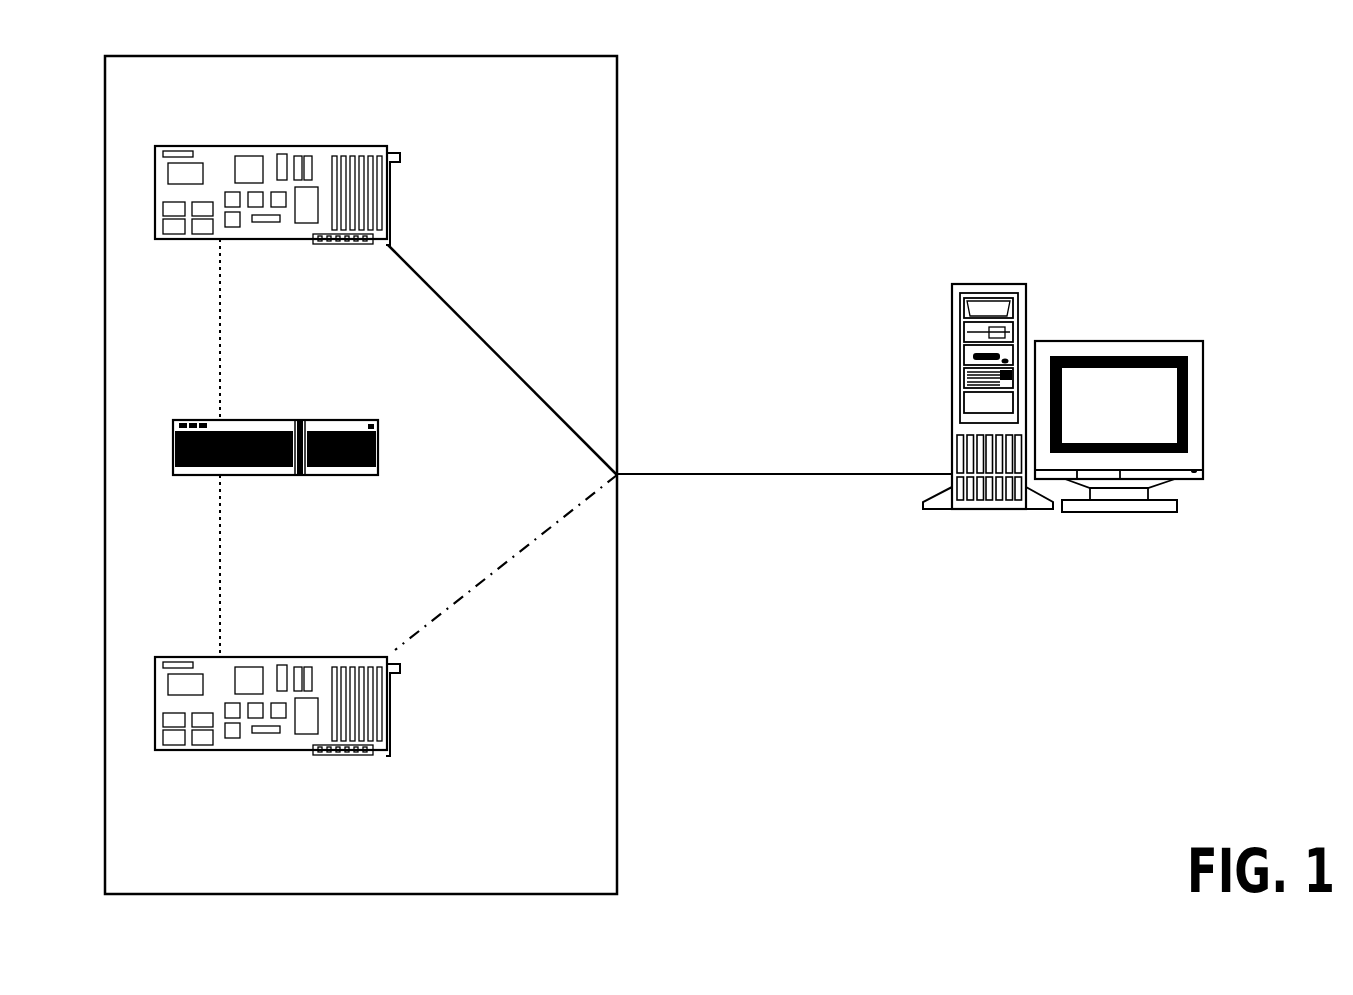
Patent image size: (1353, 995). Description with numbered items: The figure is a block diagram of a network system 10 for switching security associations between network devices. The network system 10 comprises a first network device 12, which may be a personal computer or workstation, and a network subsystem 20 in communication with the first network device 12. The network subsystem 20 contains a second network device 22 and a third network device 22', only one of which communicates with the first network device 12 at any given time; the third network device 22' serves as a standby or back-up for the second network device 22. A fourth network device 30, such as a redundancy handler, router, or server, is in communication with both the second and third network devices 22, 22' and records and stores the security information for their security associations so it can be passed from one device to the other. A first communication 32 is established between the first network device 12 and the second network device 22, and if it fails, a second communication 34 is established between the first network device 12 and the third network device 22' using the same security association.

The network system 10 is at (967, 136).
The first network device 12 is at (1064, 323).
The network subsystem 20 is at (622, 227).
The second network device 22 is at (333, 187).
The third network device 22' is at (337, 697).
The fourth network device 30 is at (380, 448).
The first communication 32 is at (543, 398).
The second communication 34 is at (515, 553).